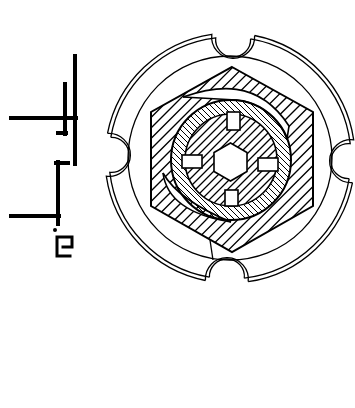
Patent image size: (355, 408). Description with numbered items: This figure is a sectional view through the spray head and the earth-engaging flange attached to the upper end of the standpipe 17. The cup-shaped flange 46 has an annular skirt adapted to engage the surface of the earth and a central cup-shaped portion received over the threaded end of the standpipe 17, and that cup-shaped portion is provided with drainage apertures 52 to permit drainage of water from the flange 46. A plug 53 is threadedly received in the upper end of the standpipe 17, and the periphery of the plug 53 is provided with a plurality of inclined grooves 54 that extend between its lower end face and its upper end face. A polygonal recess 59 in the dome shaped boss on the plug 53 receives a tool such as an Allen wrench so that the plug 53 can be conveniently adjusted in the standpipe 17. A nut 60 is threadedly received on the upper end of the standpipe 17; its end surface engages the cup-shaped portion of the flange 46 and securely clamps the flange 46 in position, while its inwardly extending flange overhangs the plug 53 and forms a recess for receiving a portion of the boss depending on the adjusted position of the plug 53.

The standpipe 17 is at (283, 118).
The cup-shaped flange 46 is at (177, 275).
The drainage apertures 52 is at (253, 268).
The plug 53 is at (275, 199).
The inclined grooves 54 is at (195, 161).
The polygonal recess 59 is at (225, 140).
The nut 60 is at (213, 261).